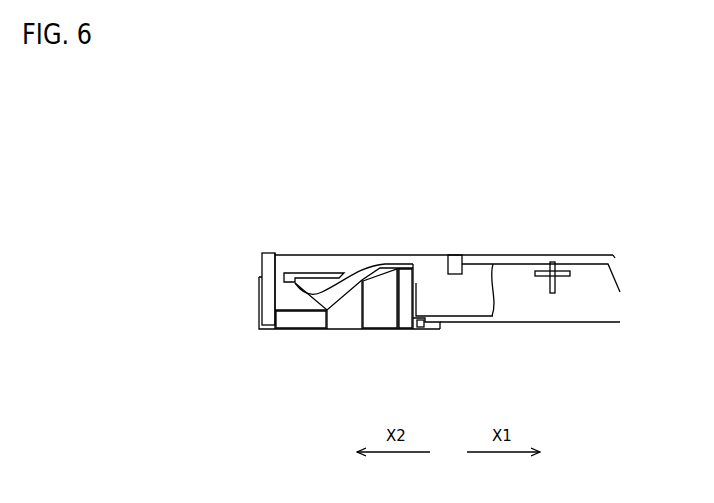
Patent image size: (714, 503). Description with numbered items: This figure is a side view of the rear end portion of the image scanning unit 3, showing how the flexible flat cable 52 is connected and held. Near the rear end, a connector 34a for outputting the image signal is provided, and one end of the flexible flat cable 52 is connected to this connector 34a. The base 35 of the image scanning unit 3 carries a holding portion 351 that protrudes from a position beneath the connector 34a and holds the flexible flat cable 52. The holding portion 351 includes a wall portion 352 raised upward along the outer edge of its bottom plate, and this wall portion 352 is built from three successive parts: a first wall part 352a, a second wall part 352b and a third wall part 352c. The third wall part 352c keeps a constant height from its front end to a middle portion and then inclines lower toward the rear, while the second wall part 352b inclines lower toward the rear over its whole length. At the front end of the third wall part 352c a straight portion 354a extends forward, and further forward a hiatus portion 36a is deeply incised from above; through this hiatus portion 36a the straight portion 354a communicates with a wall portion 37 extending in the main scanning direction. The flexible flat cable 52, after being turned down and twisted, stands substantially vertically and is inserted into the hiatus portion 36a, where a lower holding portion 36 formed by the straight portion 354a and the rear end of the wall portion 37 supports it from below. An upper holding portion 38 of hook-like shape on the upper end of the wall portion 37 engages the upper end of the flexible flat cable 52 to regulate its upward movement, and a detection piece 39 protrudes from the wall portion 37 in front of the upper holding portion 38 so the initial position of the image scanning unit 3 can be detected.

The image scanning unit 3 is at (532, 236).
The connector 34a is at (293, 272).
The base 35 is at (263, 331).
The lower holding portion 36 is at (416, 283).
The hiatus portion 36a is at (420, 328).
The wall portion 37 is at (520, 323).
The upper holding portion 38 is at (455, 255).
The detection piece 39 is at (557, 282).
The flexible flat cable 52 is at (369, 268).
The holding portion 351 is at (344, 293).
The wall portion 352 is at (357, 337).
The first wall part 352a is at (292, 324).
The second wall part 352b is at (332, 324).
The third wall part 352c is at (387, 328).
The straight portion 354a is at (400, 332).